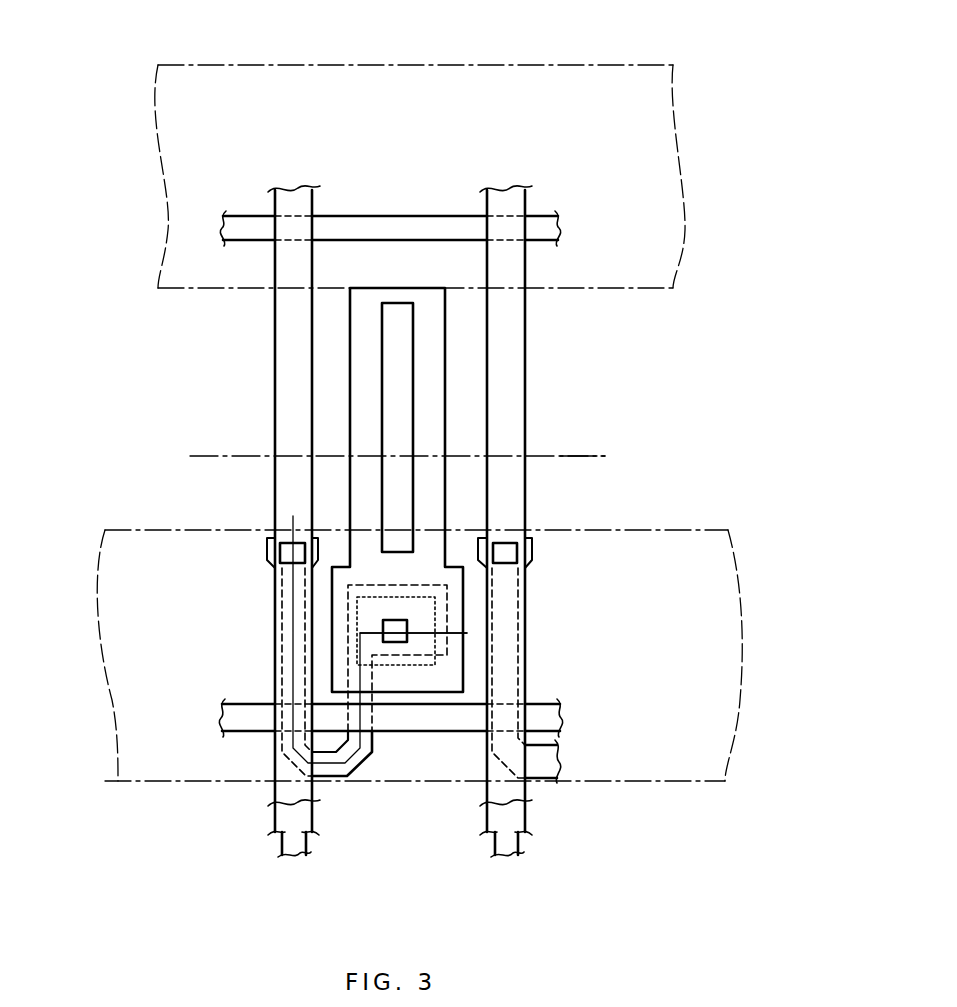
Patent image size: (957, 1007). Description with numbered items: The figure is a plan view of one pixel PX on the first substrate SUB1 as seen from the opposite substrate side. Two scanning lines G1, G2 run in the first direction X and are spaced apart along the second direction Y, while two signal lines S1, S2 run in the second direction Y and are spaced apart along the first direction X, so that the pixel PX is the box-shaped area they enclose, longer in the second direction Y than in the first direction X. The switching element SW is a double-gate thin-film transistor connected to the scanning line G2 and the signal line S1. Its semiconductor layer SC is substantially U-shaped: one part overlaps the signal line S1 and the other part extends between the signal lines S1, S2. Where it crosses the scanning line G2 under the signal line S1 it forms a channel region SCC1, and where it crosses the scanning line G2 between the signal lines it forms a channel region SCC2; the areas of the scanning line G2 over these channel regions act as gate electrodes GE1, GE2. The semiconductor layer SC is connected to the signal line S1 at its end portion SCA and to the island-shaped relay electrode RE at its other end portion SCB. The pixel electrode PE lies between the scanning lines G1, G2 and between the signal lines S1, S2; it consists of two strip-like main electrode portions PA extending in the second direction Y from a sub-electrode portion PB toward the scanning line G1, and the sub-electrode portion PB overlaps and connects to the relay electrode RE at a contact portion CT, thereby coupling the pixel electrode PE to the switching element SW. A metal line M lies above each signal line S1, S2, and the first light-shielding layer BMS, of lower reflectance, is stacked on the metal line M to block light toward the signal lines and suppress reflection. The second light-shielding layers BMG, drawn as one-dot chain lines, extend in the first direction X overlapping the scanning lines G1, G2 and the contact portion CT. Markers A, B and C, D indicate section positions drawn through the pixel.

The first direction X is at (35, 18).
The second direction Y is at (35, 18).
The pixel PX is at (405, 258).
The scanning line G1 is at (560, 229).
The scanning line G2 is at (562, 716).
The signal line S1 is at (291, 858).
The signal line S2 is at (506, 858).
The second light-shielding layer BMG is at (678, 255).
The first light-shielding layer BMS is at (283, 812).
The pixel electrode PE is at (455, 328).
The main electrode portion PA is at (368, 410).
The sub-electrode portion PB is at (463, 675).
The first substrate SUB1 is at (656, 415).
The section line position C is at (386, 457).
The section line position D is at (592, 457).
The section line position A is at (375, 627).
The section line position B is at (423, 637).
The end portion SCA is at (283, 543).
The other end portion SCB is at (447, 598).
The channel region SCC1 is at (280, 714).
The channel region SCC2 is at (373, 712).
The semiconductor layer SC is at (343, 778).
The switching element SW is at (285, 775).
The gate electrode GE1 is at (293, 712).
The gate electrode GE2 is at (375, 756).
The relay electrode RE is at (435, 612).
The contact portion CT is at (390, 621).
The metal line M is at (284, 828).